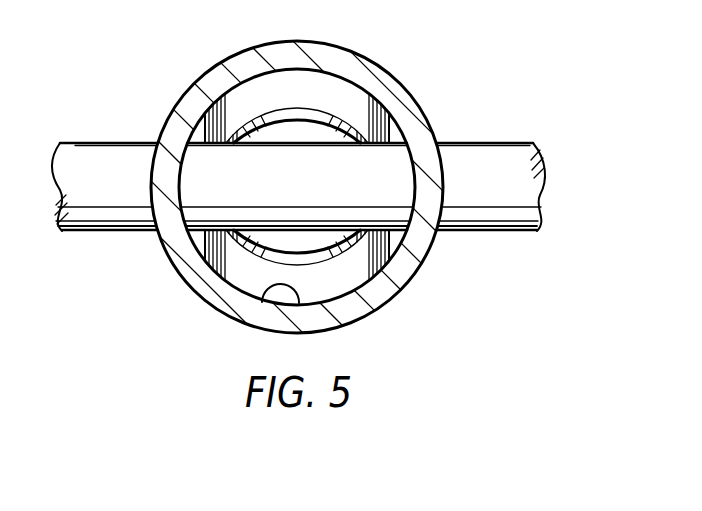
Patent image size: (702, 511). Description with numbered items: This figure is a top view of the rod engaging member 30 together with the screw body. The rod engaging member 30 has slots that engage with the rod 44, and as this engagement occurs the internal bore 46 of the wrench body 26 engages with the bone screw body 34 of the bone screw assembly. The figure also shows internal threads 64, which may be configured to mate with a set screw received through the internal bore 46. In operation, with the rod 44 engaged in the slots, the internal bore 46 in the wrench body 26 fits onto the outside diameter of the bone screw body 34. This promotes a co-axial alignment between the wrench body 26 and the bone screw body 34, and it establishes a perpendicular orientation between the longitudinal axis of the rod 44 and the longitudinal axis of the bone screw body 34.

The wrench body 26 is at (397, 295).
The rod engaging member 30 is at (393, 80).
The bone screw body 34 is at (393, 127).
The rod 44 is at (113, 233).
The internal bore 46 is at (263, 300).
The internal threads 64 is at (312, 121).